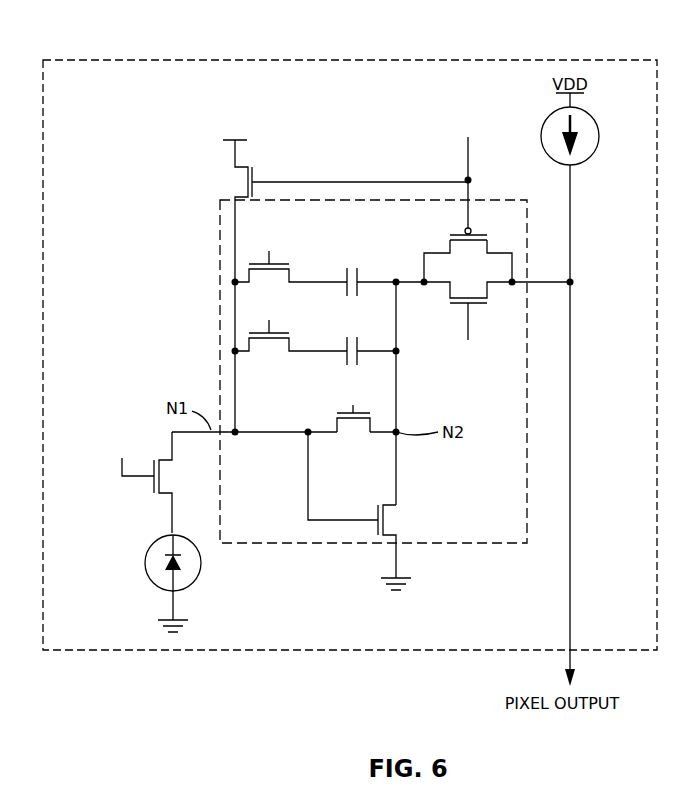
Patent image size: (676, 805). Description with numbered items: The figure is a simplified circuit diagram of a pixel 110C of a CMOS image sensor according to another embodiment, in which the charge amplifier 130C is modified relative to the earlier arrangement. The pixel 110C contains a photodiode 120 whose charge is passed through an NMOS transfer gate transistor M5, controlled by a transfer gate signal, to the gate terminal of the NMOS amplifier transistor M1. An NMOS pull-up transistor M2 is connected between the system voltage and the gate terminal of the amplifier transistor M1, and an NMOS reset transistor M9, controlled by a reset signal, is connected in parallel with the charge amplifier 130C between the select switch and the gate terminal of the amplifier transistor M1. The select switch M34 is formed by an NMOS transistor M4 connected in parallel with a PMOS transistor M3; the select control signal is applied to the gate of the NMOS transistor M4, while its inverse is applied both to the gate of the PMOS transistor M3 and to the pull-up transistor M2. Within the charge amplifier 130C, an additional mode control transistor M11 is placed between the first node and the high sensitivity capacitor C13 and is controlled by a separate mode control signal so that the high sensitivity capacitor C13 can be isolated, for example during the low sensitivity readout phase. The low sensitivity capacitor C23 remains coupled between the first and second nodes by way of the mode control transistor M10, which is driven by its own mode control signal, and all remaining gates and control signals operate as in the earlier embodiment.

The pixel 110C is at (107, 48).
The charge amplifier 130C is at (208, 229).
The photodiode 120 is at (153, 588).
The select switch M34 is at (472, 243).
The PMOS transistor M3 is at (468, 258).
The NMOS transistor M4 is at (497, 309).
The NMOS pull-up transistor M2 is at (342, 275).
The mode control transistor M11 is at (290, 262).
The mode control transistor M10 is at (290, 331).
The high sensitivity capacitor C13 is at (366, 279).
The low sensitivity capacitor C23 is at (354, 348).
The NMOS reset transistor M9 is at (355, 414).
The NMOS amplifier transistor M1 is at (366, 511).
The NMOS transfer gate transistor M5 is at (147, 482).